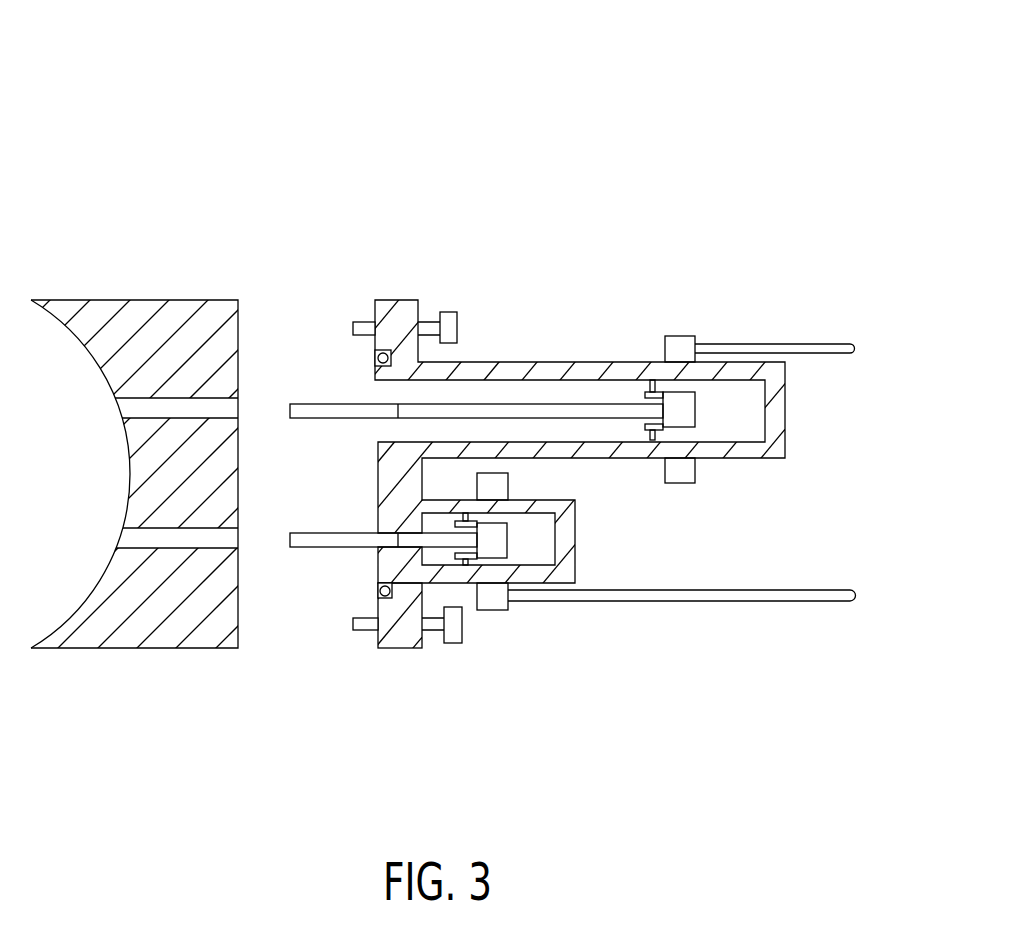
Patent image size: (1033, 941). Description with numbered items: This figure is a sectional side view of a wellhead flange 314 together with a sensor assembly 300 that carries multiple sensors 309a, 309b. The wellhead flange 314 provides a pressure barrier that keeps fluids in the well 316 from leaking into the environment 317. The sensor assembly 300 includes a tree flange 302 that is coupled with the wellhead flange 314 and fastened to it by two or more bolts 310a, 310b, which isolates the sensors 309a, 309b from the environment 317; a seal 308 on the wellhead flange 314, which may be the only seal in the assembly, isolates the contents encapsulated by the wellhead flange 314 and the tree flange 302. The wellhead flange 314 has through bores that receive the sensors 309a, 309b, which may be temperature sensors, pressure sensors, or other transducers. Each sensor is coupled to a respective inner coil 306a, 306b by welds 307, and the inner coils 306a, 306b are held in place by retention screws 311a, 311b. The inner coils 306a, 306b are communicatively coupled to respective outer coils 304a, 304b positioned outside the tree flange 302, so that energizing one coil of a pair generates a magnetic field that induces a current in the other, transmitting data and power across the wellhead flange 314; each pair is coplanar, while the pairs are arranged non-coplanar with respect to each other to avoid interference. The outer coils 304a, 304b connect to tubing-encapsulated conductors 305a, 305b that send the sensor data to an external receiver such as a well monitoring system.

The sensor assembly 300 is at (571, 282).
The tree flange 302 is at (382, 658).
The outer coil 304a is at (706, 471).
The outer coil 304b is at (521, 611).
The tubing-encapsulated conductor 305a is at (728, 331).
The tubing-encapsulated conductor 305b is at (673, 584).
The inner coil 306a is at (667, 387).
The inner coil 306b is at (518, 527).
The welds 307 is at (377, 434).
The seal 308 is at (367, 354).
The sensor 309a is at (362, 399).
The sensor 309b is at (332, 554).
The bolt 310a is at (466, 318).
The bolt 310b is at (466, 653).
The screw 311a is at (668, 435).
The screw 311b is at (486, 562).
The wellhead flange 314 is at (126, 661).
The well 316 is at (99, 482).
The environment 317 is at (213, 89).